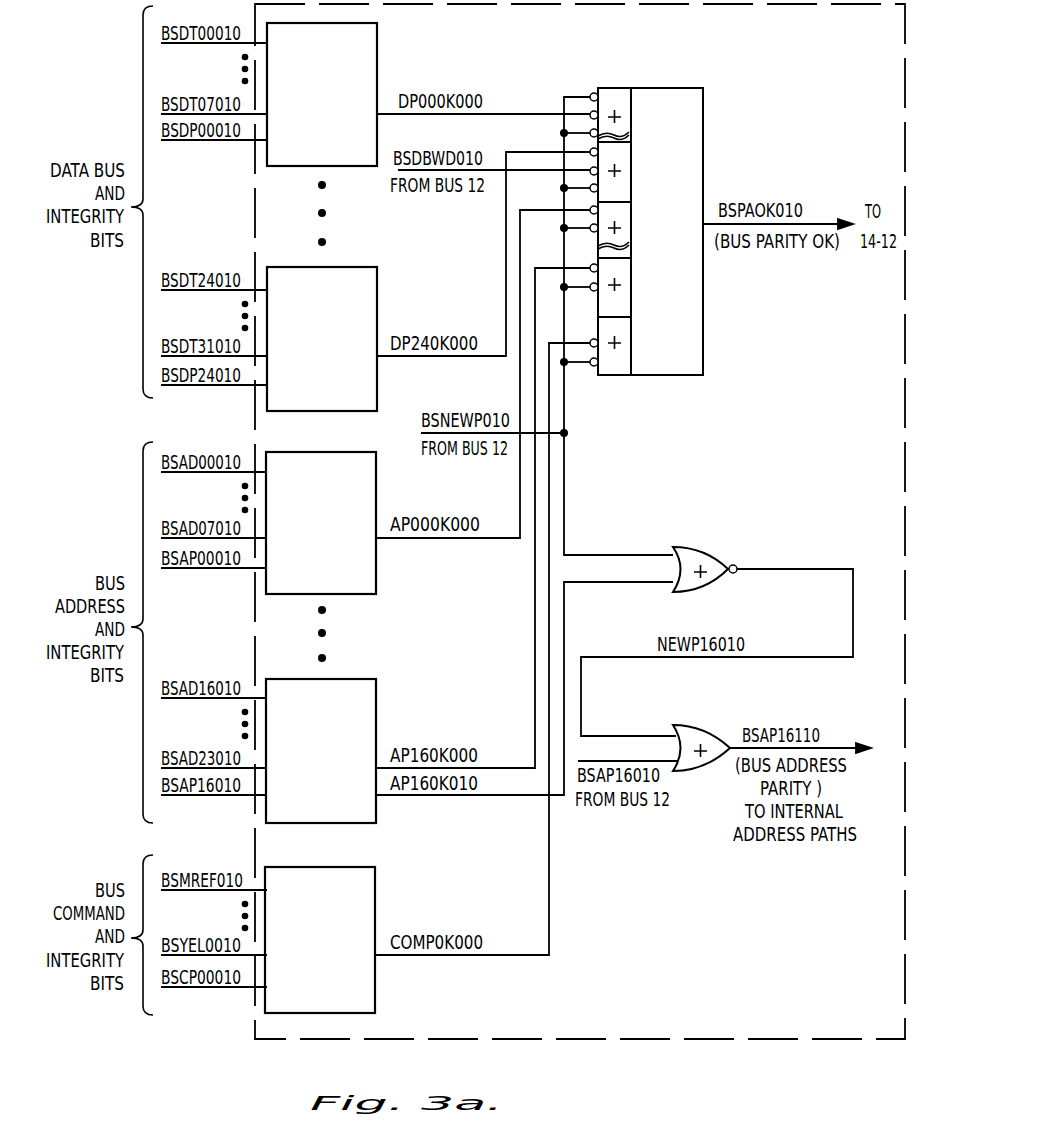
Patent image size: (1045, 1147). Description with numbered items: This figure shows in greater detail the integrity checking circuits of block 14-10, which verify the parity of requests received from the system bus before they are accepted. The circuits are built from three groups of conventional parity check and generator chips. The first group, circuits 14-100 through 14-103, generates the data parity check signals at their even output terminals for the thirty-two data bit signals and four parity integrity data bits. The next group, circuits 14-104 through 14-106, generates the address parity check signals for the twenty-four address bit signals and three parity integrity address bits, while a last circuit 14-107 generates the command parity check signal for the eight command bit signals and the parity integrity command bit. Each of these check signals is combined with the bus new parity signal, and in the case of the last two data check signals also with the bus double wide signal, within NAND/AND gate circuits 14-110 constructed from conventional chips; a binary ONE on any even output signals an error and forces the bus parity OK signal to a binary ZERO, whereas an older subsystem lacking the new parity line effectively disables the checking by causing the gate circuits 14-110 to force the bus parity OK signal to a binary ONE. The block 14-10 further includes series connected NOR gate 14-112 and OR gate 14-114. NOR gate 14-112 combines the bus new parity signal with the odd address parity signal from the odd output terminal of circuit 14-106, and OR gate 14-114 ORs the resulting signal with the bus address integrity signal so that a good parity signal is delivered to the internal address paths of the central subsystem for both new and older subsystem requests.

The integrity checking circuits 14-10 is at (712, 948).
The 74AS280 parity check and generator circuit 14-100 is at (378, 37).
The 74AS280 parity check and generator circuit 14-103 is at (378, 277).
The 74AS280 parity check and generator circuit 14-104 is at (376, 583).
The 74AS280 parity check and generator circuit 14-106 is at (376, 689).
The 74AS280 parity check and generator circuit 14-107 is at (375, 879).
The NAND/AND gate circuits 14-110 is at (672, 88).
The NOR gate 14-112 is at (705, 547).
The OR gate 14-114 is at (690, 727).